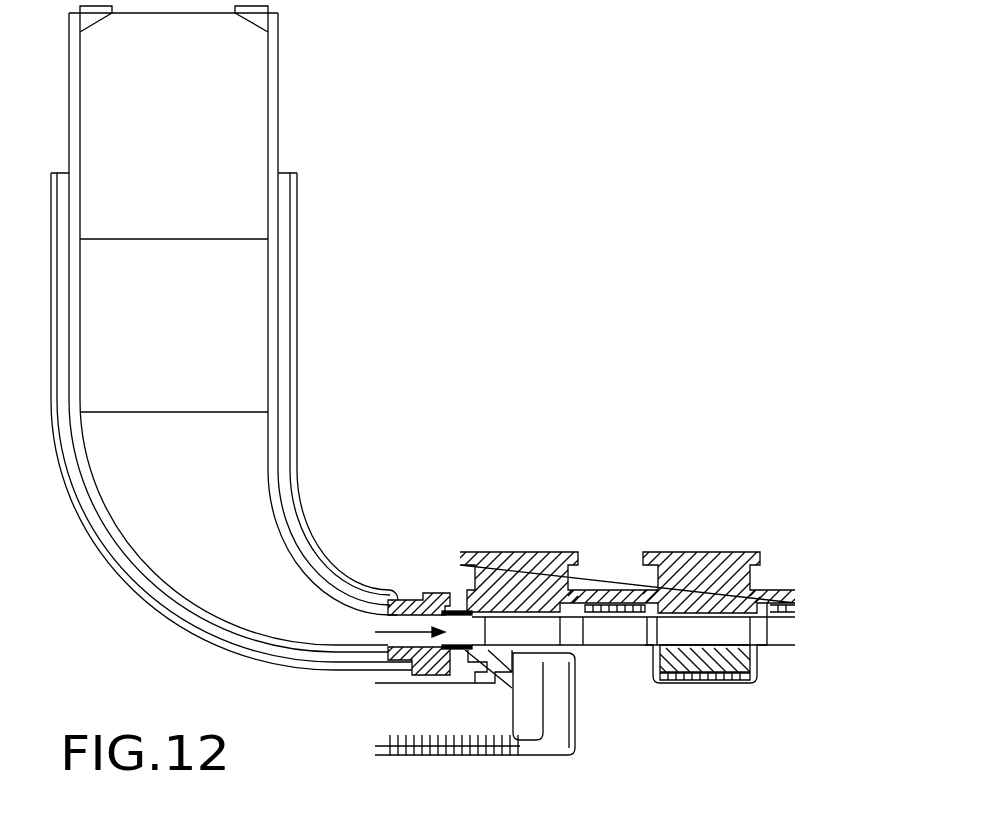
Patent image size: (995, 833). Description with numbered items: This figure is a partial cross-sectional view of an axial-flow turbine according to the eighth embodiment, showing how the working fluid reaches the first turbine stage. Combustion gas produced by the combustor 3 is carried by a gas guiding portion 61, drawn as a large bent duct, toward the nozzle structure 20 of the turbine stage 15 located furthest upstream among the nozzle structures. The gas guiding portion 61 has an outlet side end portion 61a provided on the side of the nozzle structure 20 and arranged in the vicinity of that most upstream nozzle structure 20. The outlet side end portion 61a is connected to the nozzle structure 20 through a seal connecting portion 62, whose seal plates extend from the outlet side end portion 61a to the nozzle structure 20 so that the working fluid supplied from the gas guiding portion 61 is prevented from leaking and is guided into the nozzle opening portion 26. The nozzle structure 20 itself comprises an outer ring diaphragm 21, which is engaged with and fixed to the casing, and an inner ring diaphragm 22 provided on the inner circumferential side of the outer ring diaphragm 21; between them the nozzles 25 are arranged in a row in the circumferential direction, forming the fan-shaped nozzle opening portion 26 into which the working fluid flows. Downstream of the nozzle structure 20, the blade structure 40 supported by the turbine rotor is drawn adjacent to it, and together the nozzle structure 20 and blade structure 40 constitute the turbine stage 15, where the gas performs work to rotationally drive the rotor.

The combustor 3 is at (252, 85).
The turbine stage 15 is at (585, 583).
The nozzle structure 20 is at (585, 622).
The outer ring diaphragm 21 is at (500, 563).
The inner ring diaphragm 22 is at (524, 722).
The nozzle 25 is at (633, 674).
The nozzle opening portion 26 is at (542, 628).
The blade structure 40 is at (617, 607).
The gas guiding portion 61 is at (322, 575).
The outlet side end portion 61a is at (437, 598).
The seal connecting portion 62 is at (467, 652).